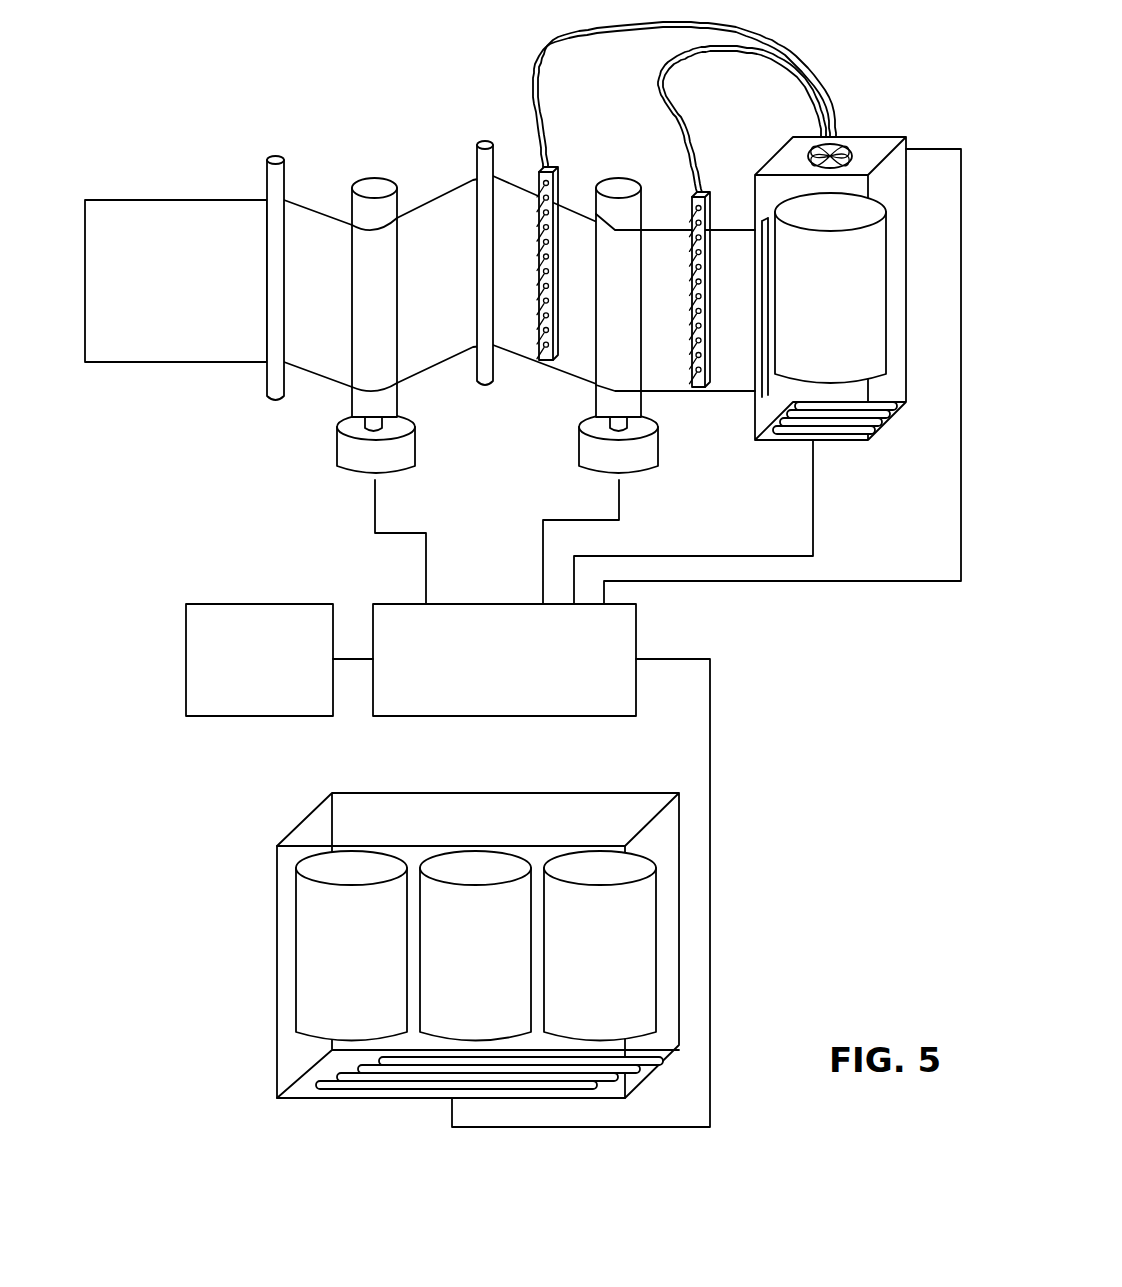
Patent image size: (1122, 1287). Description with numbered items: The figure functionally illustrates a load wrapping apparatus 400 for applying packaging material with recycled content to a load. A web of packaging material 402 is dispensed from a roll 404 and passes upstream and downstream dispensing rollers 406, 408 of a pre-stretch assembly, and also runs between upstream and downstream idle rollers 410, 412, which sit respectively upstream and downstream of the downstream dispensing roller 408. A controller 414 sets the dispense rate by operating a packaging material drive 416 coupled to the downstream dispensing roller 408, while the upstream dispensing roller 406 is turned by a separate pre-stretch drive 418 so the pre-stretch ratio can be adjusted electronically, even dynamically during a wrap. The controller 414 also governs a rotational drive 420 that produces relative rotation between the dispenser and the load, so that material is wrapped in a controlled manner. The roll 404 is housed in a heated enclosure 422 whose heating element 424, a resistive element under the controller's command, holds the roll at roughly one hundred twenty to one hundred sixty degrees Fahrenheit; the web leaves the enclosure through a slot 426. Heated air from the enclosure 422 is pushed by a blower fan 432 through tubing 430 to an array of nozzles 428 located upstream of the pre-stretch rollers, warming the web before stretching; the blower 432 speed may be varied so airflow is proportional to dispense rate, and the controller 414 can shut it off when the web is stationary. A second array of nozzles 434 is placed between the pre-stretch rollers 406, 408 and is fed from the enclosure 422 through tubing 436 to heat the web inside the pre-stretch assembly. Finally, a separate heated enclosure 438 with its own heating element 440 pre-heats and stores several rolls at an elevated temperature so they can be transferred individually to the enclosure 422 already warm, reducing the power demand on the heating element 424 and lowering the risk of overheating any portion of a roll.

The load wrapping apparatus 400 is at (175, 164).
The web of packaging material 402 is at (160, 198).
The roll 404 is at (807, 210).
The upstream dispensing roller 406 is at (598, 412).
The downstream dispensing roller 408 is at (381, 177).
The upstream idle roller 410 is at (477, 143).
The downstream idle roller 412 is at (270, 157).
The controller 414 is at (570, 716).
The packaging material drive 416 is at (371, 480).
The pre-stretch drive 418 is at (617, 480).
The rotational drive 420 is at (242, 604).
The heated enclosure 422 is at (872, 140).
The heating element 424 is at (855, 432).
The slot 426 is at (759, 400).
The array of nozzles 428 is at (694, 392).
The tubing 430 is at (656, 100).
The blower fan 432 is at (845, 140).
The array of nozzles 434 is at (539, 165).
The tubing 436 is at (541, 58).
The heated enclosure 438 is at (304, 826).
The heating element 440 is at (352, 1088).